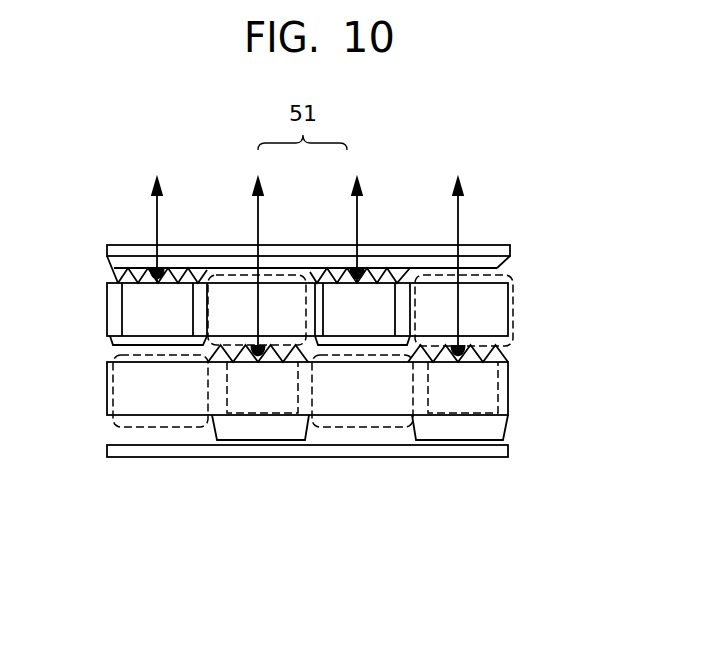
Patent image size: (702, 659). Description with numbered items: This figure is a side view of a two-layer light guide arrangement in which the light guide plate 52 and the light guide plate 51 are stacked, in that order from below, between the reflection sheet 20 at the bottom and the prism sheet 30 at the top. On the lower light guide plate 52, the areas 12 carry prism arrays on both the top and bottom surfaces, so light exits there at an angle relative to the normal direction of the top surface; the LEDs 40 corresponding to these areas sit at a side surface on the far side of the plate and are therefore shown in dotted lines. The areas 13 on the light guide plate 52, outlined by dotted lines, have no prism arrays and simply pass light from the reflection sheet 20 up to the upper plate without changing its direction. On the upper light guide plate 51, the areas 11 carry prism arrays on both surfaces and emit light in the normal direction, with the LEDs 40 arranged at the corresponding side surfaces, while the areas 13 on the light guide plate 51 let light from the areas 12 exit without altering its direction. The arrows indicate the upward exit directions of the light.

The areas 11 is at (313, 295).
The areas 12 is at (218, 395).
The areas 13 is at (283, 297).
The reflection sheet 20 is at (383, 457).
The prism sheet 30 is at (196, 245).
The LEDs 40 is at (374, 300).
The light guide plate 51 is at (510, 307).
The light guide plate 52 is at (510, 386).